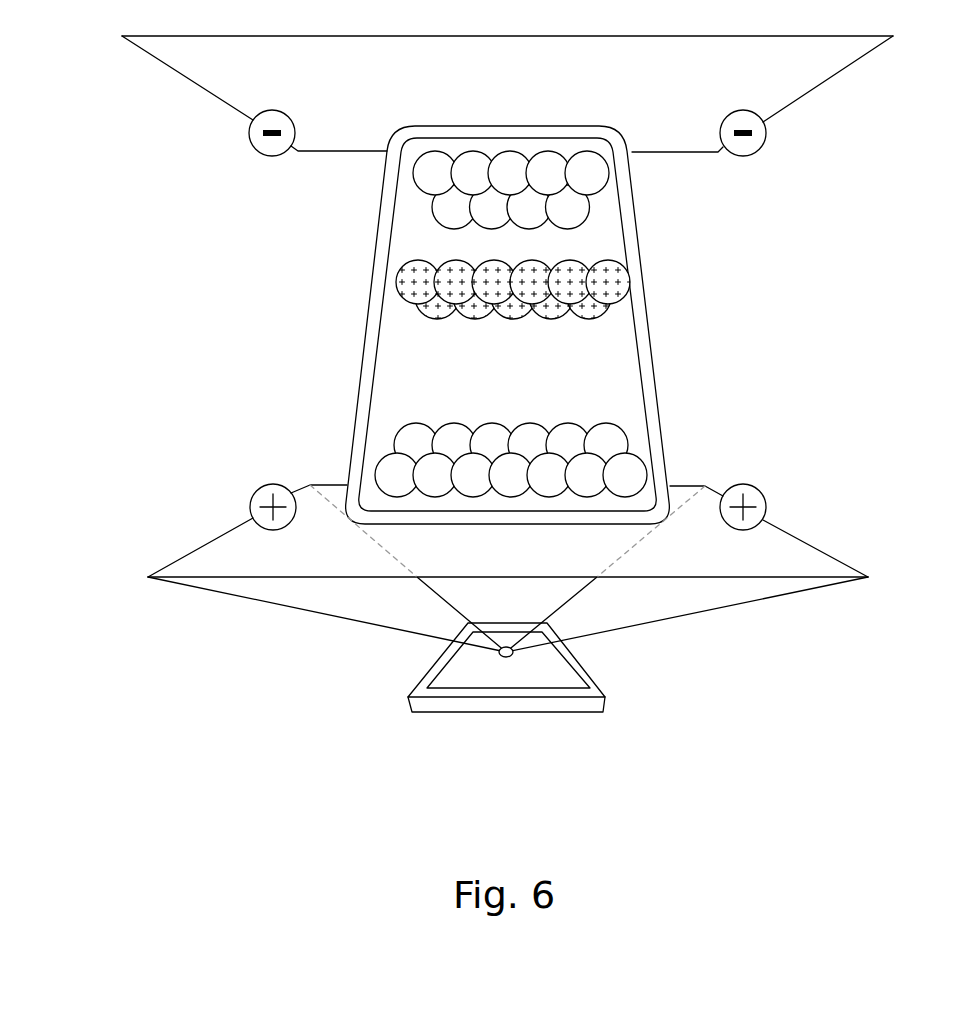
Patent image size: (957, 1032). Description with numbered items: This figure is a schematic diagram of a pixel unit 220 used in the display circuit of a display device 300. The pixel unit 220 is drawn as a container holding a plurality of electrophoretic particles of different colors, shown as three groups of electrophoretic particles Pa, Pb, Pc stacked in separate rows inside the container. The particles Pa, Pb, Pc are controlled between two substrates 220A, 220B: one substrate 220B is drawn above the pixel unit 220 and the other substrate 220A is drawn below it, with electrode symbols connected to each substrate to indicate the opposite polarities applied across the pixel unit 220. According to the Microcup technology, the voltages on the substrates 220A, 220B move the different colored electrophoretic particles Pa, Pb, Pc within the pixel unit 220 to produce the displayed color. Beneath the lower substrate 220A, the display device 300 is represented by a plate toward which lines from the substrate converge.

The pixel unit 220 is at (258, 318).
The substrate 220A is at (805, 540).
The substrate 220B is at (818, 87).
The display device 300 is at (600, 697).
The electrophoretic particles Pa is at (607, 172).
The electrophoretic particles Pb is at (626, 278).
The electrophoretic particles Pc is at (636, 464).